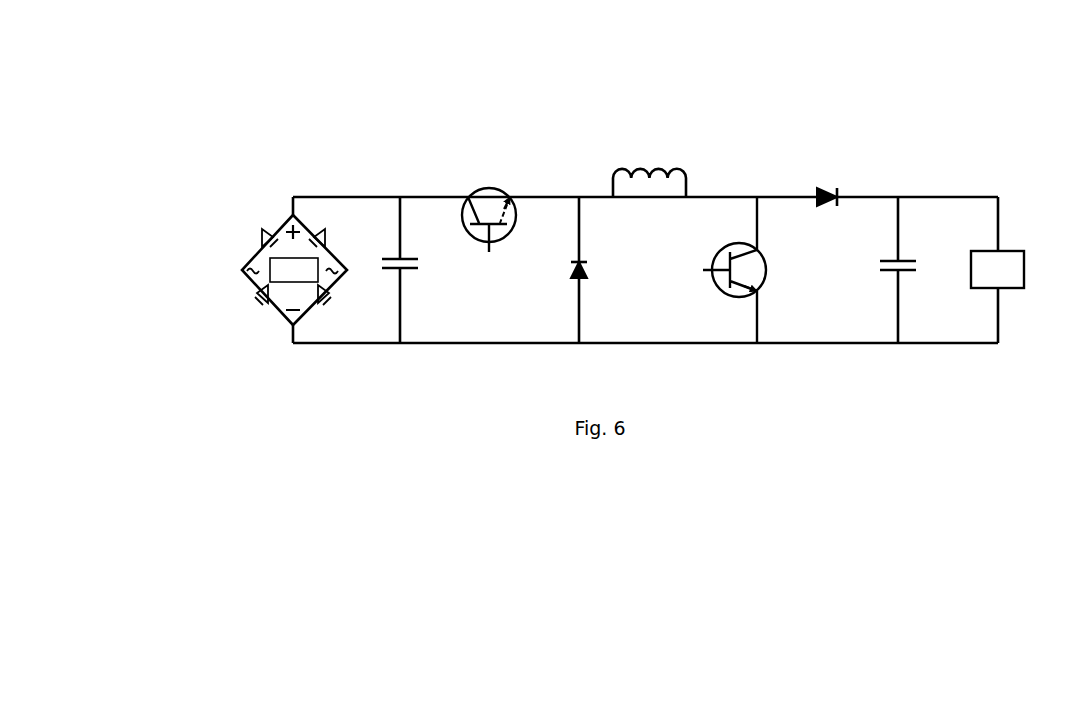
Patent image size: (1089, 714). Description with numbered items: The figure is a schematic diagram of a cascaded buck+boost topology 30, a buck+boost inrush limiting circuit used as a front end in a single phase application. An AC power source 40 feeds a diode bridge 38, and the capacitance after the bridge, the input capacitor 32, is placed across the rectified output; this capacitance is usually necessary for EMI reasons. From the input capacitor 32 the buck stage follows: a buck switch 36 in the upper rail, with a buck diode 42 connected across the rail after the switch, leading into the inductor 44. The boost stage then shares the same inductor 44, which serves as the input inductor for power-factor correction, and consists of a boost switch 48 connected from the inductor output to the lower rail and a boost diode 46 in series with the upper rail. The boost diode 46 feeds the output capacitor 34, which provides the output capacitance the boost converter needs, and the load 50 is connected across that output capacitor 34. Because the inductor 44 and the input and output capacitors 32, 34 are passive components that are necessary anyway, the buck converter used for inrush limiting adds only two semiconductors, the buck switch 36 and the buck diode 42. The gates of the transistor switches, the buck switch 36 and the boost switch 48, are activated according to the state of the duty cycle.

The cascaded buck+boost topology 30 is at (720, 89).
The input capacitor 32 is at (411, 281).
The output capacitor 34 is at (909, 249).
The buck switch 36 is at (487, 183).
The bridge 38 is at (261, 232).
The AC power source 40 is at (262, 279).
The buck diode 42 is at (591, 281).
The inductor 44 is at (643, 166).
The boost diode 46 is at (828, 181).
The boost switch 48 is at (769, 284).
The load 50 is at (1020, 298).